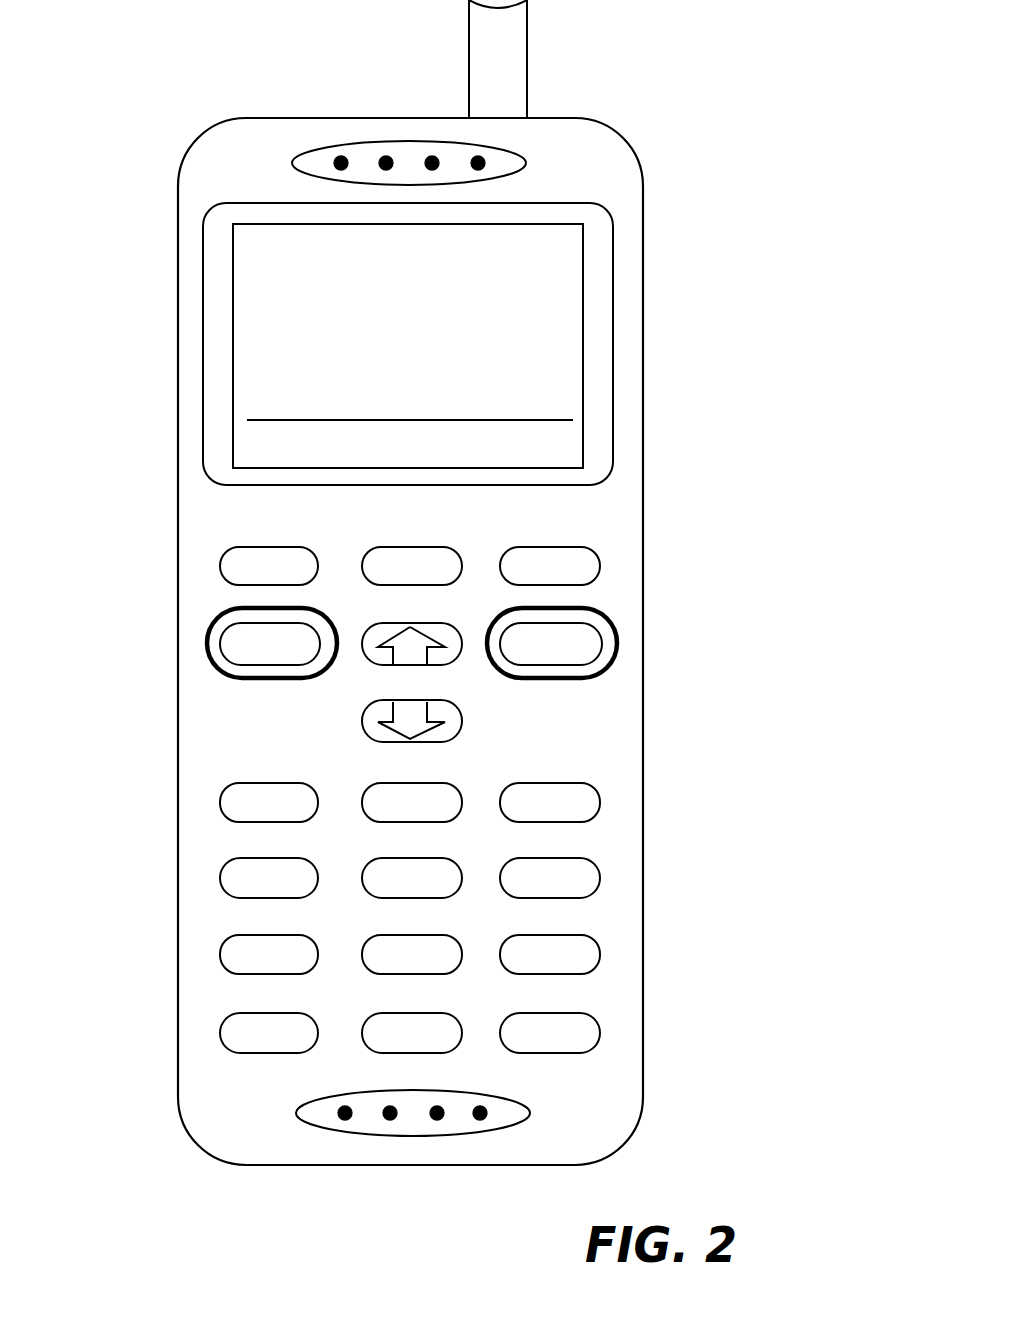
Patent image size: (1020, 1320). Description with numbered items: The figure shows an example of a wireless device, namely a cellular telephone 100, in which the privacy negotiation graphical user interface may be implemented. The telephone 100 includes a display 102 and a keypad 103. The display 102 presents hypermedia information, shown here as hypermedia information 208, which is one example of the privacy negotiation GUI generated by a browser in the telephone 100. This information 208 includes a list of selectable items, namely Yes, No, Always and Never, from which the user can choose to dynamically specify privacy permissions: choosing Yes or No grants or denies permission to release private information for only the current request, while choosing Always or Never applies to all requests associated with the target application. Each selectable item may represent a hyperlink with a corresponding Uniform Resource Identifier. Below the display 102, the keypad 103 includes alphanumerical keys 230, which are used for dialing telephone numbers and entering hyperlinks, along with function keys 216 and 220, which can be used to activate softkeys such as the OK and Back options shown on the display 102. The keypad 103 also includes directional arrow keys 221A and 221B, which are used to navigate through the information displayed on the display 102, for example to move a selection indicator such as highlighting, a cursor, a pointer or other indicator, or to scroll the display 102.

The cellular telephone 100 is at (643, 222).
The display 102 is at (613, 337).
The keypad 103 is at (593, 509).
The hypermedia information 208 is at (250, 404).
The function key 216 is at (617, 632).
The function key 220 is at (205, 637).
The directional arrow key 221A is at (387, 618).
The directional arrow key 221B is at (385, 742).
The alphanumerical keys 230 is at (612, 781).